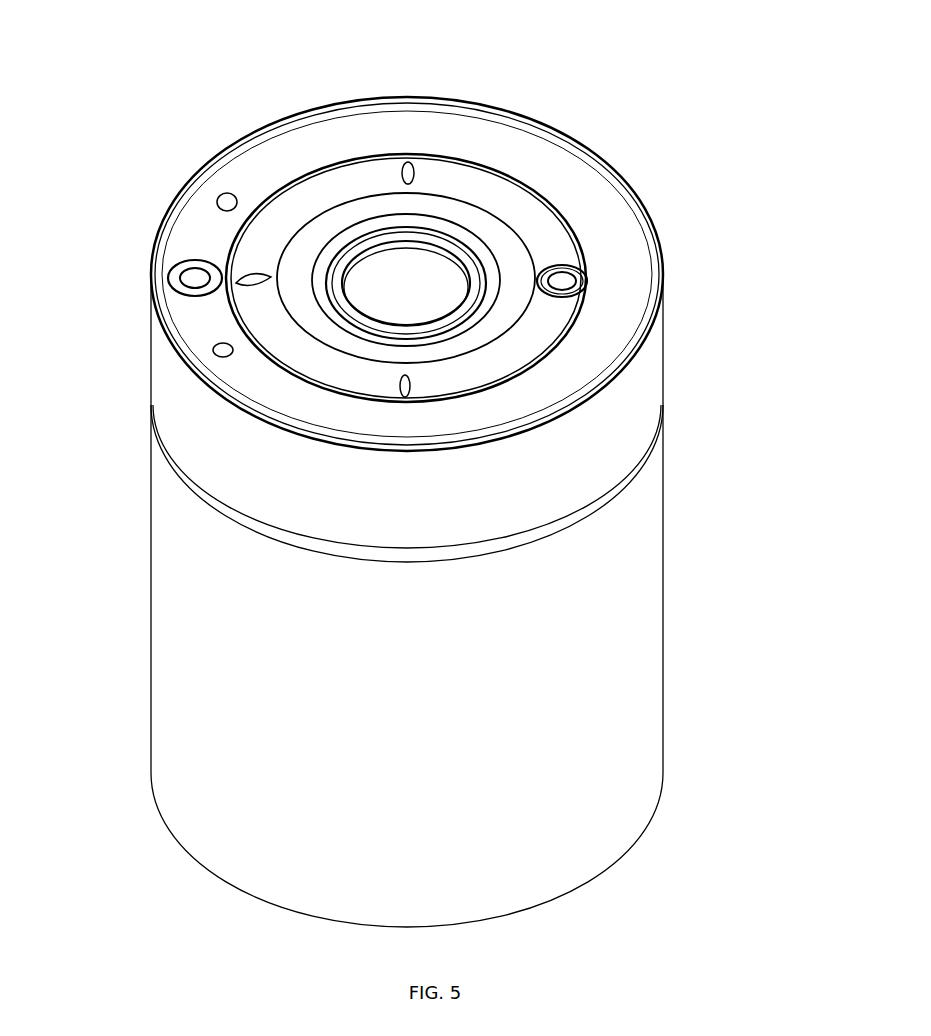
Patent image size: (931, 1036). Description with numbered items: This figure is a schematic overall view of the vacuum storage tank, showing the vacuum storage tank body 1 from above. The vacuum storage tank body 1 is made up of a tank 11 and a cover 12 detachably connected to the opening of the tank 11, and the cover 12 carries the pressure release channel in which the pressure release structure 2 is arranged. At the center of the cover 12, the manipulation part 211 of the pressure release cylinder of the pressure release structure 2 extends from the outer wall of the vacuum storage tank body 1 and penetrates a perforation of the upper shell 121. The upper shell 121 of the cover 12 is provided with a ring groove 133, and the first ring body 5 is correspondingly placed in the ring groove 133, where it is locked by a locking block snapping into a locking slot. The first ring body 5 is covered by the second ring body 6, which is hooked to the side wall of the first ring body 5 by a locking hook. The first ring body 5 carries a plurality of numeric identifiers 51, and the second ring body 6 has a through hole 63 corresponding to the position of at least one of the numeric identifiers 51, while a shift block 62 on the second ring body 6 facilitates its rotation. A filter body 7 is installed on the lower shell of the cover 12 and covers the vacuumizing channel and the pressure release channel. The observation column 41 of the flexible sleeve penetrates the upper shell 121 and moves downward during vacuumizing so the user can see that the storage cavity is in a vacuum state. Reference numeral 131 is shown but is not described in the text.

The vacuum storage tank body 1 is at (485, 512).
The tank 11 is at (590, 660).
The cover 12 is at (466, 280).
The pressure release structure 2 is at (273, 361).
The manipulation part 211 is at (408, 302).
The first ring body 5 is at (644, 285).
The numeric identifiers 51 is at (583, 288).
The second ring body 6 is at (340, 195).
The shift block 62 is at (225, 274).
The through hole 63 is at (610, 258).
The filter body 7 is at (537, 227).
The upper shell 121 is at (419, 228).
The protrusion 131 is at (268, 277).
The ring groove 133 is at (485, 160).
The observation column 41 is at (222, 196).